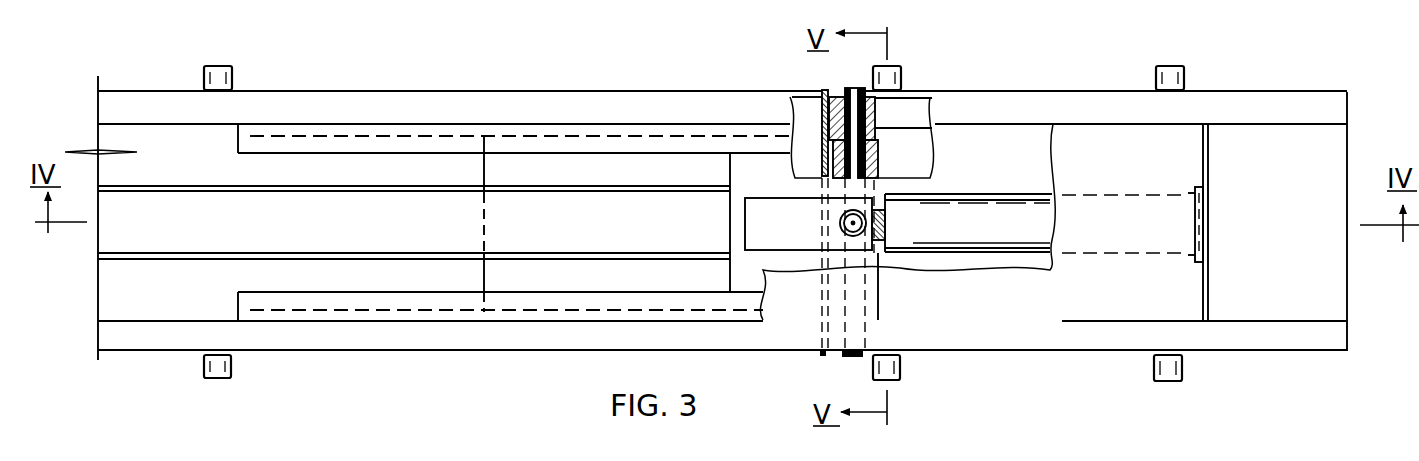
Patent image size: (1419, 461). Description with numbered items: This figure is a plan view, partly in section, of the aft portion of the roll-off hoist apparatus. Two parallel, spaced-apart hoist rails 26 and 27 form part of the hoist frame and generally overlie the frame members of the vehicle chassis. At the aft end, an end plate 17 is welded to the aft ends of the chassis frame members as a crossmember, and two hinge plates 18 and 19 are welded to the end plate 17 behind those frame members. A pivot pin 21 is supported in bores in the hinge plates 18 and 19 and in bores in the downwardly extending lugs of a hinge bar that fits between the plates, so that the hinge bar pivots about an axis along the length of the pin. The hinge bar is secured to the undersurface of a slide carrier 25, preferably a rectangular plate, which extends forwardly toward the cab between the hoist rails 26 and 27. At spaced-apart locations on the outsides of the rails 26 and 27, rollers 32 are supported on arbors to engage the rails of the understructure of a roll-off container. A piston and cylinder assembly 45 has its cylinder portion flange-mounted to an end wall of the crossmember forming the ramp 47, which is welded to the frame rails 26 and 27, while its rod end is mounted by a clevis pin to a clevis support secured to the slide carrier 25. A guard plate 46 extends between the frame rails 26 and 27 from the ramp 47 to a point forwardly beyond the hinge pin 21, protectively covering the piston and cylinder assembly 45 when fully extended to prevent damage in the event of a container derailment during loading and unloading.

The end plate 17 is at (825, 354).
The hinge plate 18 is at (836, 357).
The hinge plate 19 is at (833, 97).
The pivot pin 21 is at (898, 137).
The slide carrier 25 is at (484, 172).
The hoist rail 26 is at (470, 351).
The hoist rail 27 is at (428, 91).
The roller 32 is at (221, 65).
The piston and cylinder assembly 45 is at (996, 194).
The guard plate 46 is at (1146, 171).
The ramp 47 is at (1295, 273).